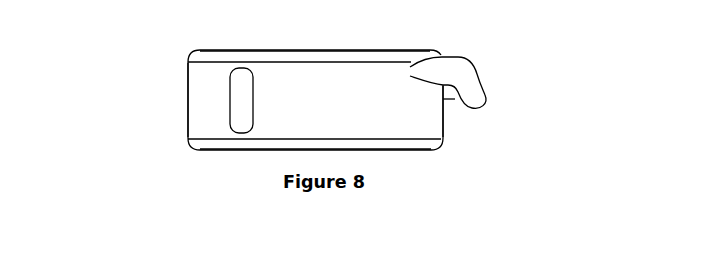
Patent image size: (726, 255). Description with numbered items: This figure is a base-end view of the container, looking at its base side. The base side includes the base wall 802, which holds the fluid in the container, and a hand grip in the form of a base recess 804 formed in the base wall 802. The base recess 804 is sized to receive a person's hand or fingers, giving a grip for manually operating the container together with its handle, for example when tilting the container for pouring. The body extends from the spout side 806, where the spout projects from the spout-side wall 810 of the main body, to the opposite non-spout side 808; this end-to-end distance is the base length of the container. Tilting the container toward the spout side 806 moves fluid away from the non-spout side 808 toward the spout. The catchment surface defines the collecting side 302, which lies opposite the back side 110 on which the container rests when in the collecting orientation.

The base wall 802 is at (397, 115).
The base recess 804 is at (243, 85).
The spout side 806 is at (500, 43).
The non-spout side 808 is at (174, 172).
The spout-side wall 810 is at (445, 119).
The collecting side 302 is at (166, 73).
The back side 110 is at (167, 180).